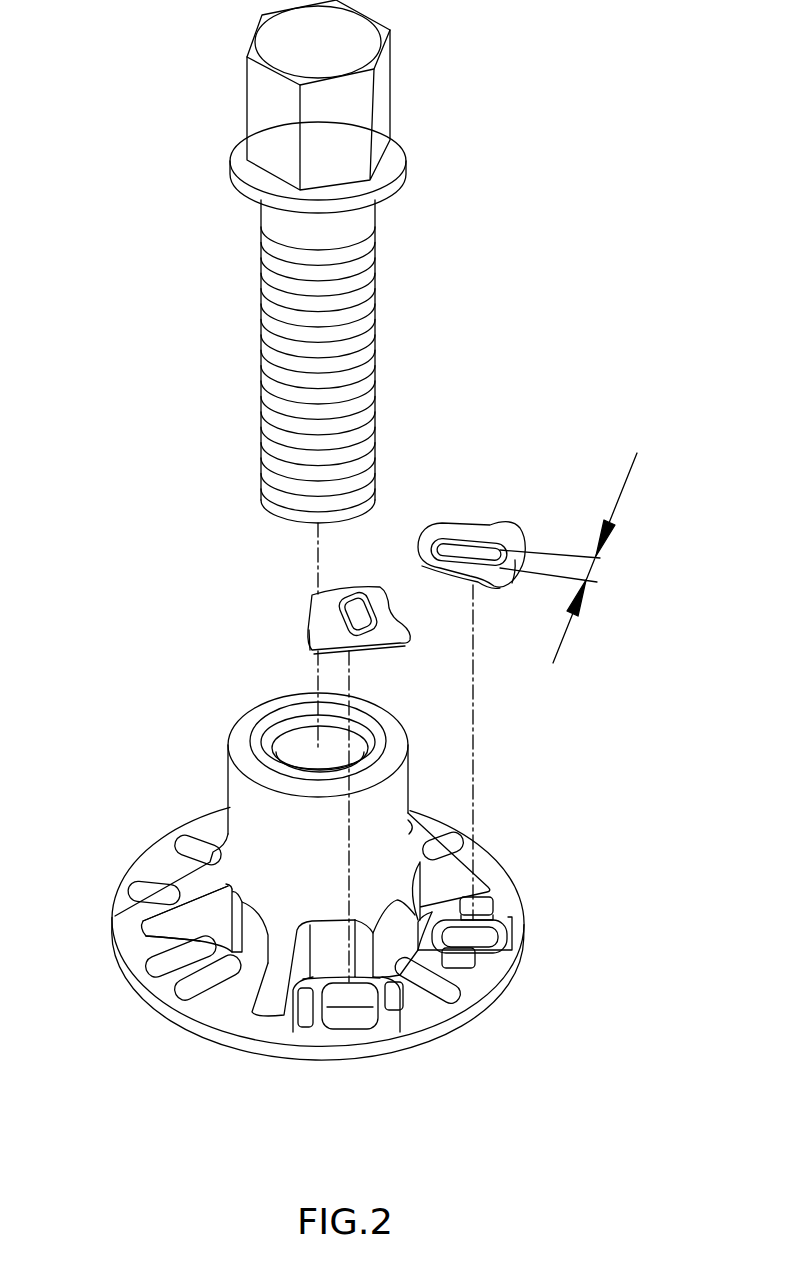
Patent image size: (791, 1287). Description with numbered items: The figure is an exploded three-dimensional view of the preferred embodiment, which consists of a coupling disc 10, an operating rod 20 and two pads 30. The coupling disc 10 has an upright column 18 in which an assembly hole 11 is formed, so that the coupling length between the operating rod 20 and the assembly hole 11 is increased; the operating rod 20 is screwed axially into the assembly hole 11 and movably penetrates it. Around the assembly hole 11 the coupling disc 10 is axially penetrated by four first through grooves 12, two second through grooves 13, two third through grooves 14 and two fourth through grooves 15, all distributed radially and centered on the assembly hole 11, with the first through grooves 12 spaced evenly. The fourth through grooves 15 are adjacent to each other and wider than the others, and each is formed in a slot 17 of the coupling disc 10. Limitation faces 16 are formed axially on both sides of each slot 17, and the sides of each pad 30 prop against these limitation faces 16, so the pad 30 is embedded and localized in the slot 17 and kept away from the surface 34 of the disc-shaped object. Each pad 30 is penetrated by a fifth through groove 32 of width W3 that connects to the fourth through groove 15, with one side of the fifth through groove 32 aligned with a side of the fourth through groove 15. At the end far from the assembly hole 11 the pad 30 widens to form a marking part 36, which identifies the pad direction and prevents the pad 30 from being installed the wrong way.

The coupling disc 10 is at (333, 858).
The assembly hole 11 is at (270, 733).
The first through grooves 12 is at (182, 840).
The second through grooves 13 is at (148, 970).
The third through grooves 14 is at (135, 890).
The fourth through grooves 15 is at (357, 1032).
The limitation faces 16 is at (322, 1017).
The slots 17 is at (297, 1038).
The upright column 18 is at (302, 845).
The operating rod 20 is at (372, 318).
The pads 30 is at (418, 552).
The fifth through groove 32 is at (340, 612).
The surface 34 is at (363, 593).
The marking part 36 is at (310, 642).
The width of the fifth through groove W3 is at (585, 558).